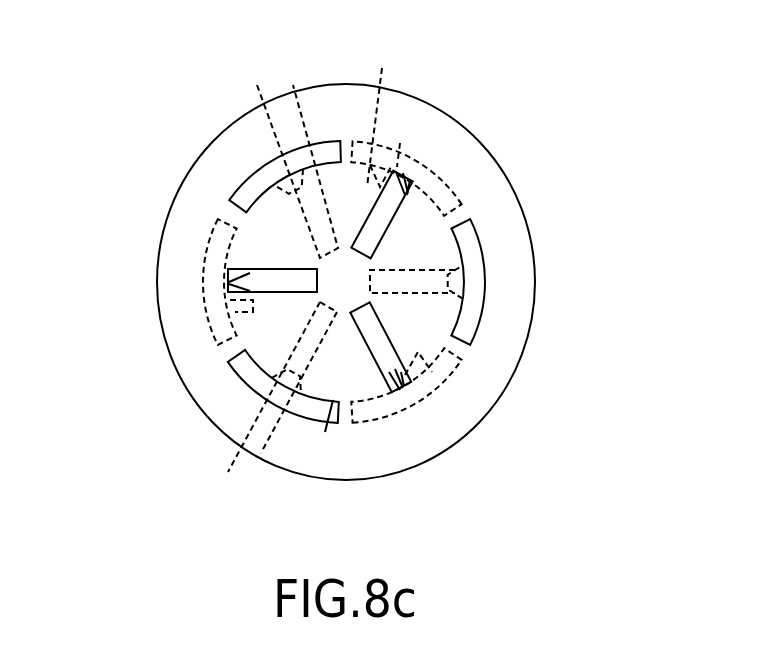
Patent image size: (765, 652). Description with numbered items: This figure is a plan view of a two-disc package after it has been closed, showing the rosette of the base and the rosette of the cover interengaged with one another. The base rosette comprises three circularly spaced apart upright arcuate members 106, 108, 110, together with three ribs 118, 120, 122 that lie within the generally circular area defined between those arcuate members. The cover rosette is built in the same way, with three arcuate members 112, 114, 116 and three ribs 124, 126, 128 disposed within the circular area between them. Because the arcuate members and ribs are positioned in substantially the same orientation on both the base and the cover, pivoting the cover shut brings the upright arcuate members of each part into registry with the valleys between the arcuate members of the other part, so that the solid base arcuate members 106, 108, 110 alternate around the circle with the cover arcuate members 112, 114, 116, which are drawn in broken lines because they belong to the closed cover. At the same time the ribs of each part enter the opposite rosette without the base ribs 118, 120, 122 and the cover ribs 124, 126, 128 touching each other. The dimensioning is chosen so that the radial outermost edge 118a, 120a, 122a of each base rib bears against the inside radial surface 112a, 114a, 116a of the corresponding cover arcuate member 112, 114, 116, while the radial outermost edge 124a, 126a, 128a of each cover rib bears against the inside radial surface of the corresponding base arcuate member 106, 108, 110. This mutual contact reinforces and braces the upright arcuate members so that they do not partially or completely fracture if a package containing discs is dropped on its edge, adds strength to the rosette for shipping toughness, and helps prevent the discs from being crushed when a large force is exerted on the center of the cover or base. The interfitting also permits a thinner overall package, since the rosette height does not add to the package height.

The upright arcuate member 106 is at (263, 175).
The upright arcuate member 108 is at (474, 260).
The upright arcuate member 110 is at (326, 430).
The arcuate member 112 is at (400, 143).
The inside radial surface 112a is at (387, 115).
The arcuate member 114 is at (225, 300).
The inside radial surface 114a is at (250, 303).
The arcuate member 116 is at (455, 365).
The inside radial surface 116a is at (460, 395).
The rib 118 is at (228, 282).
The radial outermost edge 118a is at (232, 290).
The rib 120 is at (395, 203).
The radial outermost edge 120a is at (412, 206).
The rib 122 is at (412, 360).
The radial outermost edge 122a is at (391, 378).
The rib 124 is at (455, 275).
The radial outermost edge 124a is at (445, 303).
The rib 126 is at (320, 258).
The radial outermost edge 126a is at (293, 85).
The rib 128 is at (273, 429).
The radial outermost edge 128a is at (268, 370).